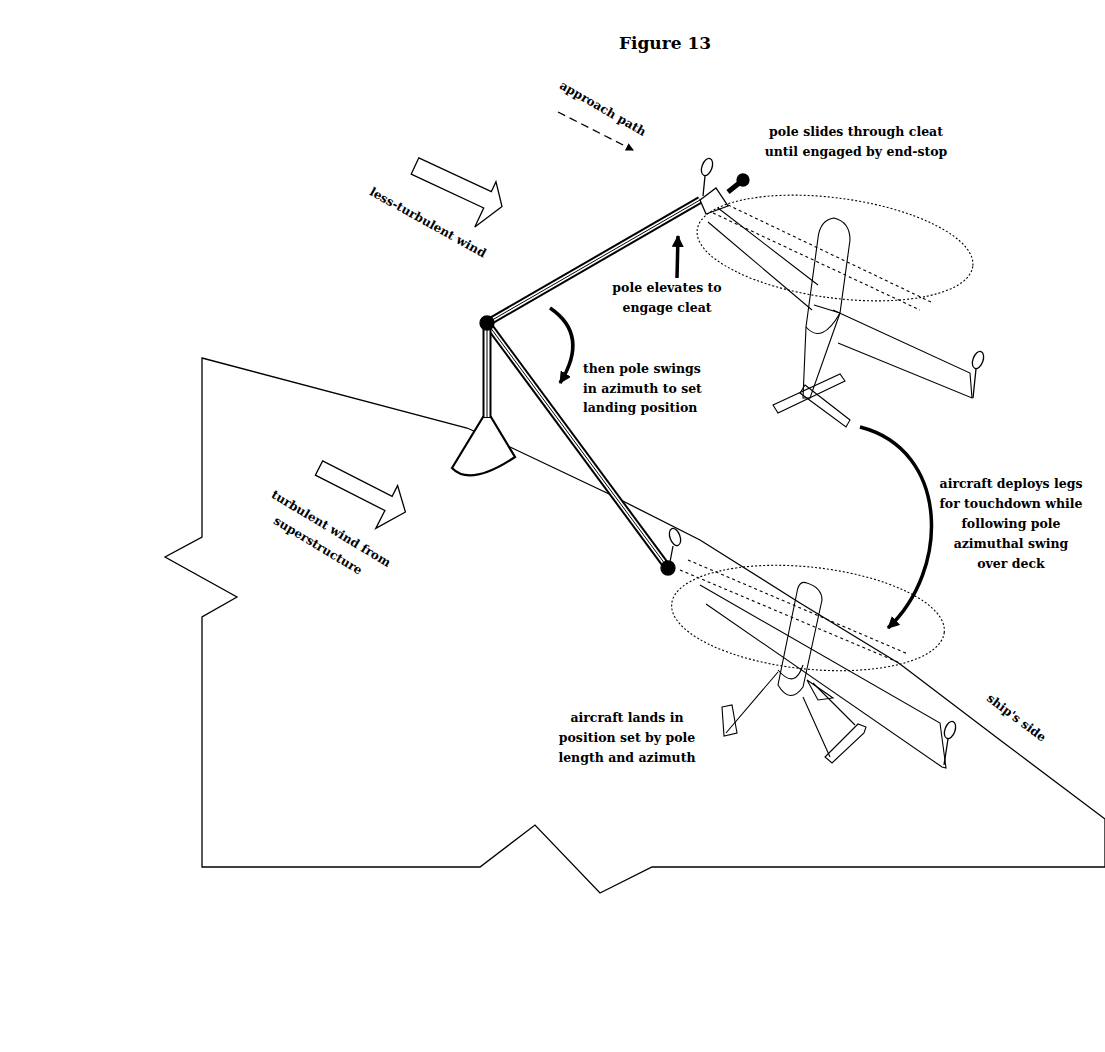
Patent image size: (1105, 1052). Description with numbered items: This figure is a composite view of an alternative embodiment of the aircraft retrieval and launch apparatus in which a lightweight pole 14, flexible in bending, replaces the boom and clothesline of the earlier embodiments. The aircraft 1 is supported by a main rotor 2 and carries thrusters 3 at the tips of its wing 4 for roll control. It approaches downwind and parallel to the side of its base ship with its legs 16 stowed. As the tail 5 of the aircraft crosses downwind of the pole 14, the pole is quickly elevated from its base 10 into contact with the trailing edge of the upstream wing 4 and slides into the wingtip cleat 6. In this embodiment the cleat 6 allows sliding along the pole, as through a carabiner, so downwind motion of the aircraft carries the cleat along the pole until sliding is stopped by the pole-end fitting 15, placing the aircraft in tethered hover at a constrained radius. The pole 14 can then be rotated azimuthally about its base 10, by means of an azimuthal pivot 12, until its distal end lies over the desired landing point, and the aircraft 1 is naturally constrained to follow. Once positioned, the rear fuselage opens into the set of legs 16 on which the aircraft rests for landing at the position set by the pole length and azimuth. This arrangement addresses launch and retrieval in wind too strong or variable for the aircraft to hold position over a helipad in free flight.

The aircraft 1 is at (835, 315).
The main rotor 2 is at (926, 290).
The thrusters 3 is at (704, 155).
The wing 4 is at (737, 222).
The tail 5 is at (770, 414).
The wingtip cleat 6 is at (693, 197).
The base 10 is at (480, 318).
The azimuthal pivot 12 is at (473, 413).
The lightweight pole 14 is at (622, 236).
The pole-end fitting 15 is at (743, 172).
The legs 16 is at (744, 668).